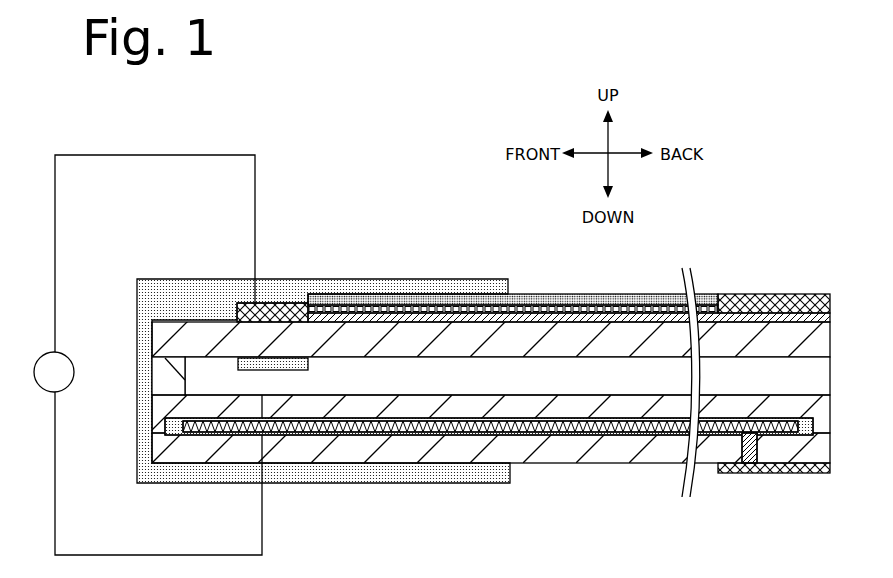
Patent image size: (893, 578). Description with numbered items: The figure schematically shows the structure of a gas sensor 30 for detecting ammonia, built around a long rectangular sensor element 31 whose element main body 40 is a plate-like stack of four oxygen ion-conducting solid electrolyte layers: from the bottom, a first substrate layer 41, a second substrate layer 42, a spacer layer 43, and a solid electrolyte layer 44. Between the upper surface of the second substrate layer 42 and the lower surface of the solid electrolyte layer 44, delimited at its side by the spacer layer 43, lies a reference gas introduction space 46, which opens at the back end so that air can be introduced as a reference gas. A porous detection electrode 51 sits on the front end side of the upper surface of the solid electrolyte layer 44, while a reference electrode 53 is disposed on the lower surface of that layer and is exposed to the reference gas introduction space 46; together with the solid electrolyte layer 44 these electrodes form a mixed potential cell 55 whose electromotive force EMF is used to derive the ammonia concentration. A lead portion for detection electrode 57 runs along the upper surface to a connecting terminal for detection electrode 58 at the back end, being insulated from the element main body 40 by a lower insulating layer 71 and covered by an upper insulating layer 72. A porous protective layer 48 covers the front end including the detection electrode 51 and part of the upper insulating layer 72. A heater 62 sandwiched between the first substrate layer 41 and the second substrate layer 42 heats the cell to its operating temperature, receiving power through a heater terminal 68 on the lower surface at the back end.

The gas sensor 30 is at (785, 131).
The sensor element 31 is at (127, 253).
The element main body 40 is at (500, 391).
The first substrate layer 41 is at (826, 443).
The second substrate layer 42 is at (826, 416).
The spacer layer 43 is at (160, 378).
The solid electrolyte layer 44 is at (831, 338).
The reference gas introduction space 46 is at (822, 377).
The porous protective layer 48 is at (213, 292).
The detection electrode 51 is at (275, 302).
The reference electrode 53 is at (310, 367).
The mixed potential cell 55 is at (155, 147).
The lead portion for detection electrode 57 is at (555, 294).
The connecting terminal for detection electrode 58 is at (783, 292).
The heater 62 is at (195, 437).
The heater terminal 68 is at (833, 466).
The lower insulating layer 71 is at (585, 306).
The upper insulating layer 72 is at (613, 314).